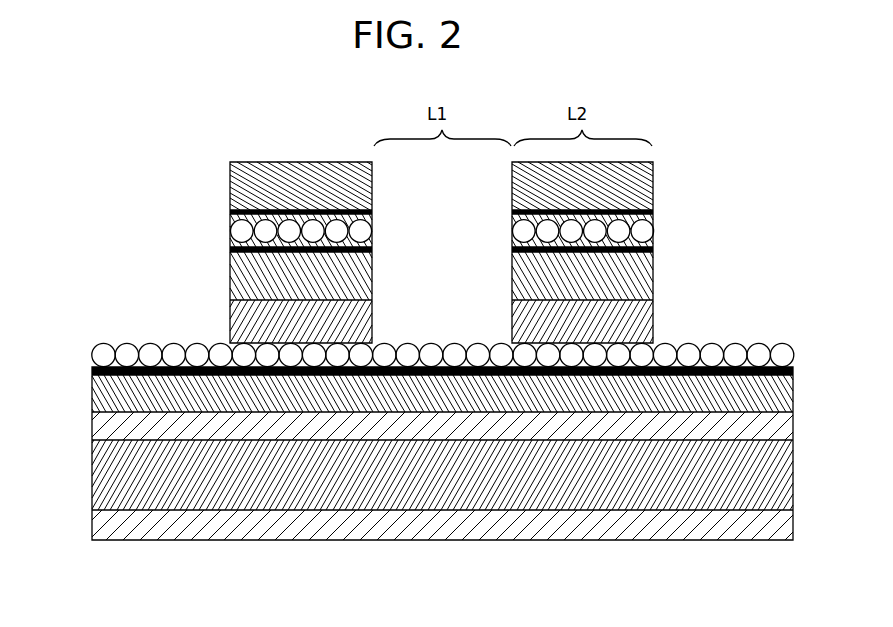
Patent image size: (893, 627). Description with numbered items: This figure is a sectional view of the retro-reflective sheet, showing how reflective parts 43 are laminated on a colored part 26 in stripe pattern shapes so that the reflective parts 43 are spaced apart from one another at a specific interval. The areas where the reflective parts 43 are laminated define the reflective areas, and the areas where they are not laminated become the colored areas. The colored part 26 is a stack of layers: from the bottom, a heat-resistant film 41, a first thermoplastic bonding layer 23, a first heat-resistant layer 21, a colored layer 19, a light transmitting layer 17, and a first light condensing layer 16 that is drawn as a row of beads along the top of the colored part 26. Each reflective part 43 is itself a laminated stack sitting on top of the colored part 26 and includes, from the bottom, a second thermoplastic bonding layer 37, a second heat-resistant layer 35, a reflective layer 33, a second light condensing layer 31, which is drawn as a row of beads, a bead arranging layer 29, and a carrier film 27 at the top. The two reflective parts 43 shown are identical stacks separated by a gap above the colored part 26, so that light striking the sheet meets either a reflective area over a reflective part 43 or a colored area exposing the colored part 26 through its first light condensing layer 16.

The light scattering particles 16 is at (780, 344).
The light transmitting layer 17 is at (92, 372).
The colored layer 19 is at (765, 392).
The first heat-resistant layer 21 is at (766, 426).
The first thermoplastic bonding layer 23 is at (780, 478).
The colored part 26 is at (451, 464).
The carrier film 27 is at (230, 178).
The bead arranging layer 29 is at (230, 212).
The second light condensing layer 31 is at (236, 232).
The reflective layer 33 is at (230, 250).
The second heat-resistant layer 35 is at (641, 283).
The second thermoplastic bonding layer 37 is at (641, 318).
The heat-resistant film 41 is at (738, 530).
The reflective part 43 is at (449, 215).